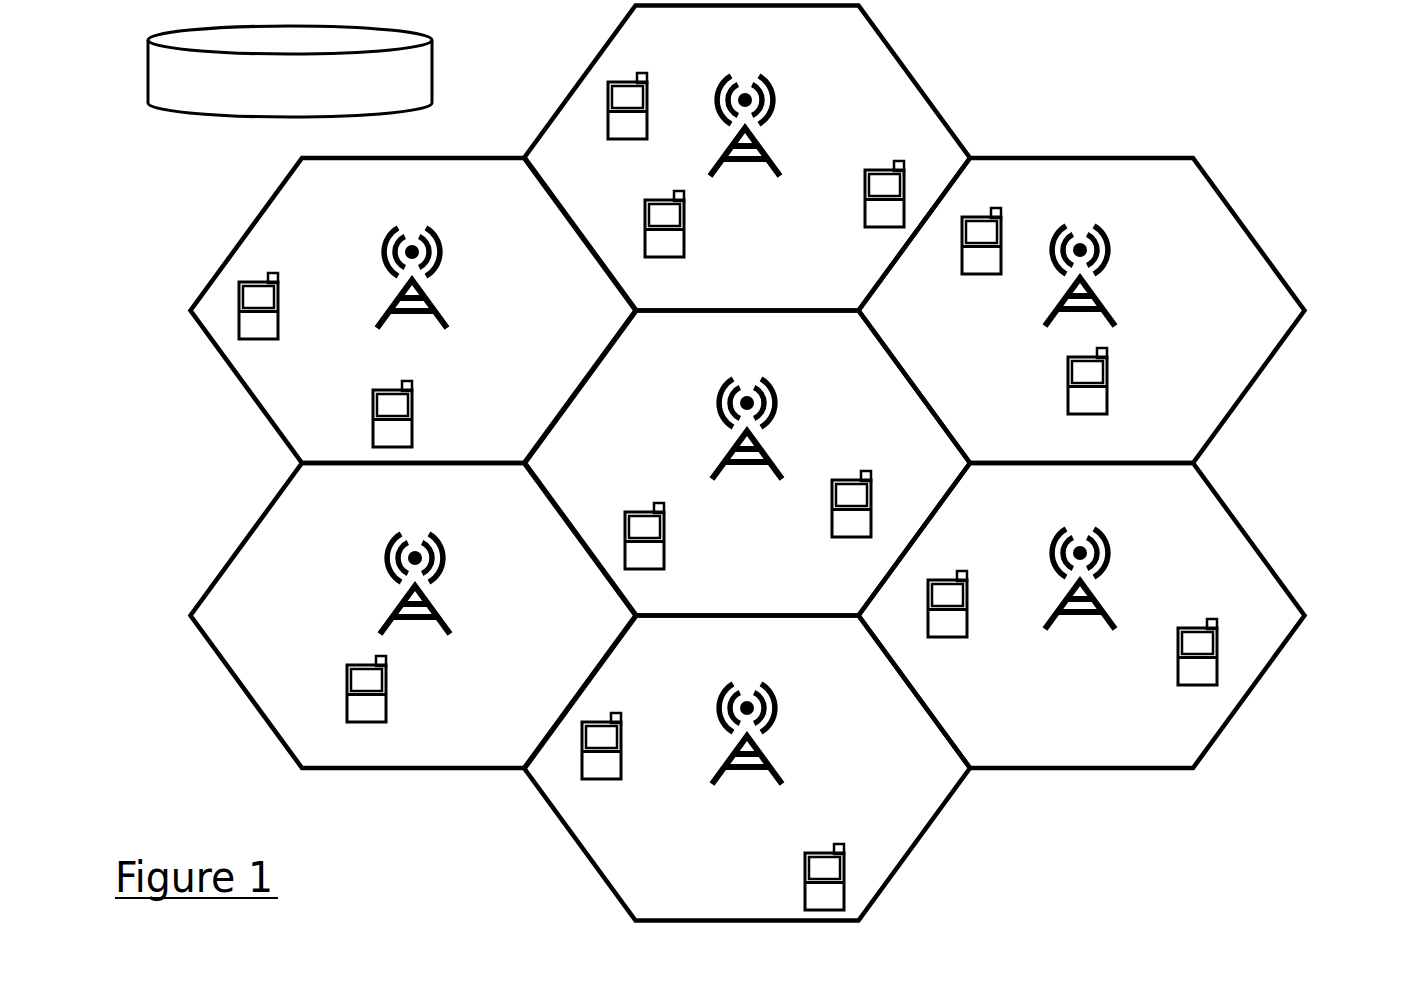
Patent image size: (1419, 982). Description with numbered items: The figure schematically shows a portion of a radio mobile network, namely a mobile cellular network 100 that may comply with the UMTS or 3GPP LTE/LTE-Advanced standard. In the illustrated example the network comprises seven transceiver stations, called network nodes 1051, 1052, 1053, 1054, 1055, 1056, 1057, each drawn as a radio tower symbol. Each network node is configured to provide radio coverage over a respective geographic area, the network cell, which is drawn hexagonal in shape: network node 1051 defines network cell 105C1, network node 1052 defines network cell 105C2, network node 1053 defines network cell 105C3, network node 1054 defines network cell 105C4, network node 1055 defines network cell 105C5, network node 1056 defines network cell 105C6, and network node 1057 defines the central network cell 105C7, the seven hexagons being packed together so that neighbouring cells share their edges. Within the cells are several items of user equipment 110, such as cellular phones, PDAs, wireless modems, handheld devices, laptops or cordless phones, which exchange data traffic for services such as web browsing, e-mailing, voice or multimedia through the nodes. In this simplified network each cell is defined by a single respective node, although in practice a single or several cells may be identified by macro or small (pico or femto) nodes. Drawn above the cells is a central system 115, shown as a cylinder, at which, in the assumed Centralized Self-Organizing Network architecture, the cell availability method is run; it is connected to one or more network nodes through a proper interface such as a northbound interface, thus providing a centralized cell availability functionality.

The mobile cellular network 100 is at (1298, 47).
The central system 115 is at (313, 89).
The network cell 105C1 is at (377, 310).
The network cell 105C2 is at (405, 615).
The network cell 105C3 is at (794, 768).
The network cell 105C4 is at (1114, 615).
The network cell 105C5 is at (1125, 310).
The network cell 105C6 is at (794, 158).
The network cell 105C7 is at (637, 457).
The network node 1051 is at (465, 278).
The network node 1052 is at (466, 584).
The network node 1053 is at (798, 734).
The network node 1054 is at (1129, 579).
The network node 1055 is at (1133, 276).
The network node 1056 is at (798, 126).
The network node 1057 is at (800, 429).
The user equipment 110 is at (728, 470).